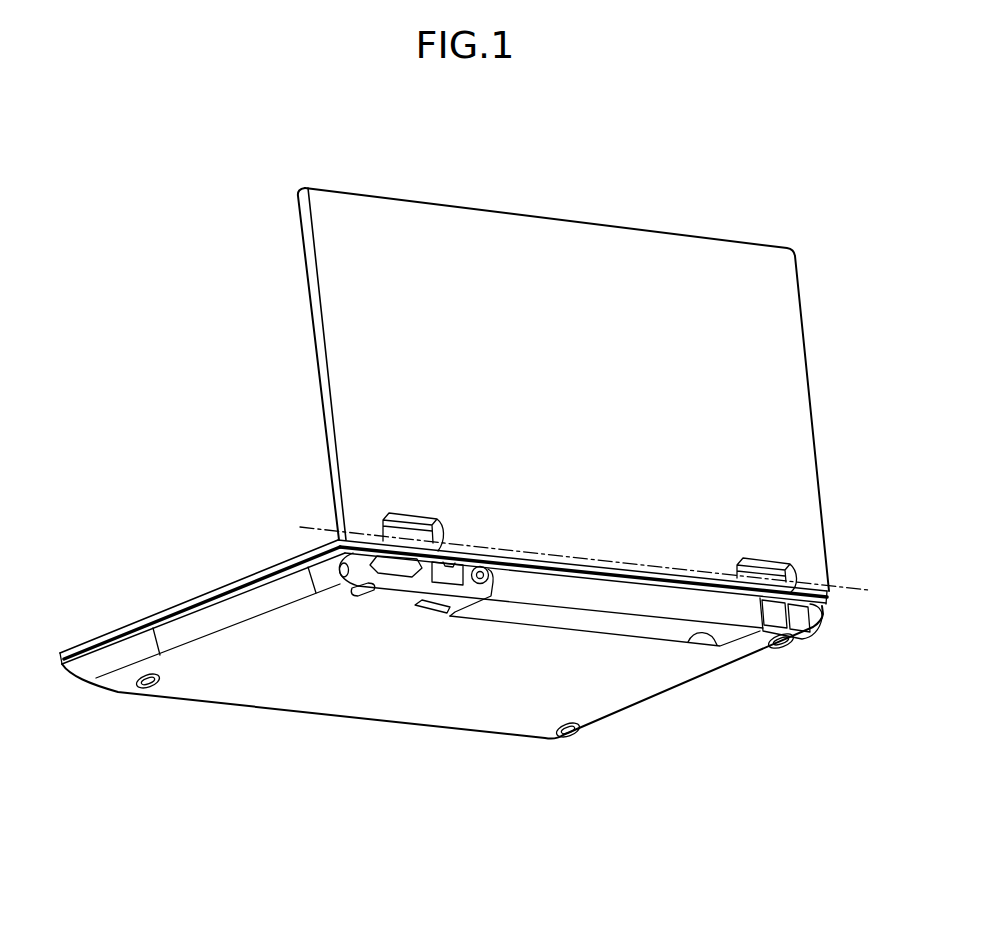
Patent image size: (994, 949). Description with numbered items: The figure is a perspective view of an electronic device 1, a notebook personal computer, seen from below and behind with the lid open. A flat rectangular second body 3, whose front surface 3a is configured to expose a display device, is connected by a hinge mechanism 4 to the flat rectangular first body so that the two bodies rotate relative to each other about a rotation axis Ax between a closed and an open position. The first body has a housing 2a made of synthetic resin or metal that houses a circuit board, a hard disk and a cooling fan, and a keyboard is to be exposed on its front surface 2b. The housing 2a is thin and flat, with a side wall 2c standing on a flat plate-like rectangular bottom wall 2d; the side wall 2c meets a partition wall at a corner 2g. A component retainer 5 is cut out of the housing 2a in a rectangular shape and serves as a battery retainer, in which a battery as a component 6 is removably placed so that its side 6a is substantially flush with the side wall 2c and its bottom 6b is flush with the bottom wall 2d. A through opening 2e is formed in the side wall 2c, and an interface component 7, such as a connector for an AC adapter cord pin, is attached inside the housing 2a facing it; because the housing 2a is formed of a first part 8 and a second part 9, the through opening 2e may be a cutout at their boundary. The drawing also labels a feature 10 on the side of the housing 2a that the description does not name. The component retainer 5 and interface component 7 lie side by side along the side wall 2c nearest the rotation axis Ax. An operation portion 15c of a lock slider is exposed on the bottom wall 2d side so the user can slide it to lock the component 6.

The electronic device 1 is at (600, 148).
The housing 2a is at (443, 640).
The front surface 2b is at (268, 560).
The side wall 2c is at (425, 558).
The bottom wall 2d is at (515, 713).
The through opening 2e is at (452, 558).
The corner 2g is at (488, 570).
The second body 3 is at (534, 382).
The front surface 3a is at (303, 283).
The hinge mechanism 4 is at (394, 519).
The component retainer 5 is at (698, 640).
The component 6 is at (560, 632).
The side 6a is at (683, 598).
The bottom 6b is at (656, 630).
The interface component 7 is at (470, 599).
The first part 8 is at (190, 696).
The second part 9 is at (113, 630).
The side surface 10 is at (181, 615).
The operation portion 15c is at (428, 613).
The rotation axis Ax is at (846, 589).